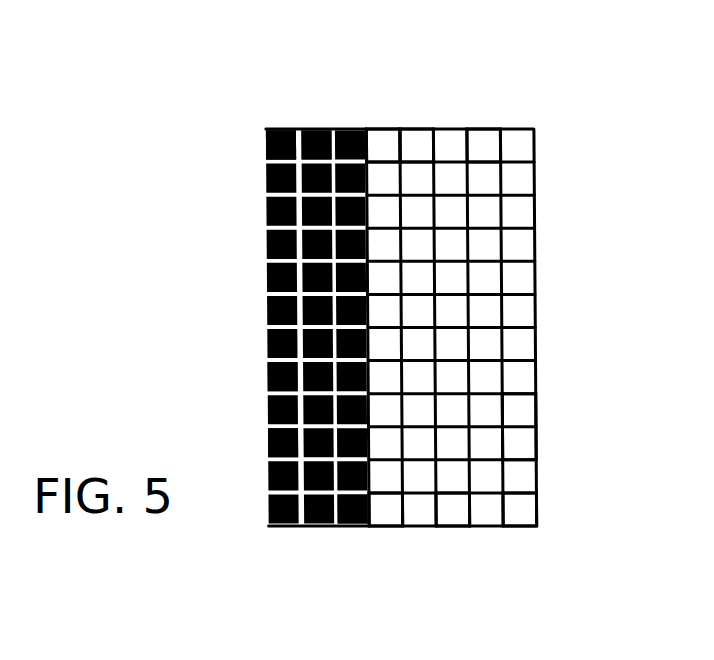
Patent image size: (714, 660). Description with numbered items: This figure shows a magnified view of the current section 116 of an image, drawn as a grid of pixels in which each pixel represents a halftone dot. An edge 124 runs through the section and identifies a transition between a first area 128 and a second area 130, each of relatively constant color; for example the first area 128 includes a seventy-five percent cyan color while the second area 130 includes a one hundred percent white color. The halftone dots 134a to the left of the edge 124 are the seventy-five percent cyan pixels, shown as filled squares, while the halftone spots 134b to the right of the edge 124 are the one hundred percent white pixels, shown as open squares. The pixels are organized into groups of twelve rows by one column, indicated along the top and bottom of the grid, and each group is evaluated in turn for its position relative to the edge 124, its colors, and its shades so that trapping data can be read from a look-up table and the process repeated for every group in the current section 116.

The current section 116 is at (563, 31).
The edge 124 is at (383, 162).
The first area 128 is at (268, 248).
The second area 130 is at (525, 375).
The halftone dots 134a is at (270, 427).
The halftone spots 134b is at (525, 440).